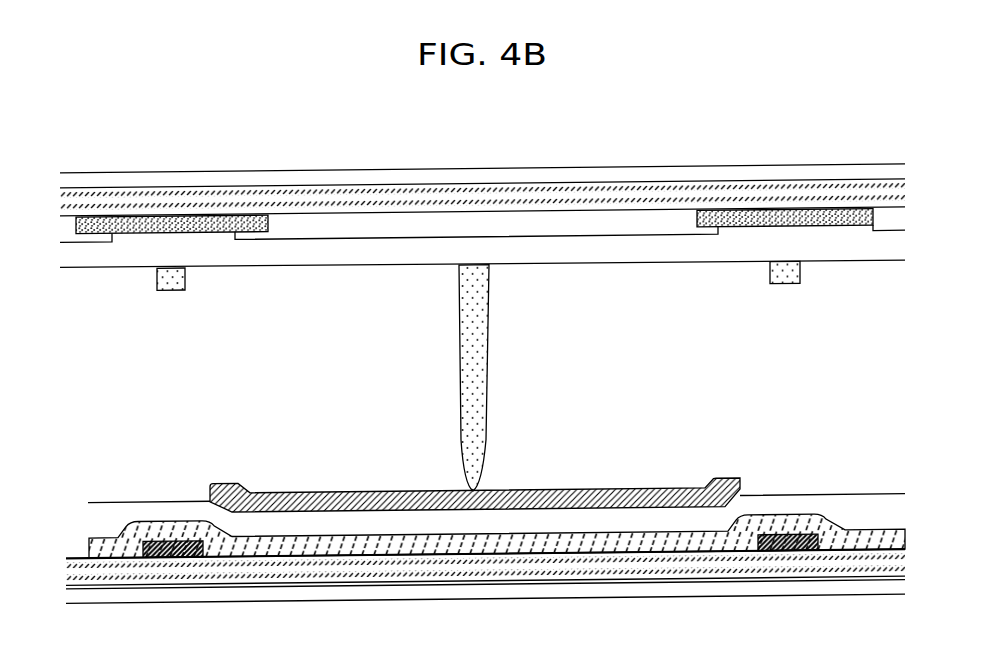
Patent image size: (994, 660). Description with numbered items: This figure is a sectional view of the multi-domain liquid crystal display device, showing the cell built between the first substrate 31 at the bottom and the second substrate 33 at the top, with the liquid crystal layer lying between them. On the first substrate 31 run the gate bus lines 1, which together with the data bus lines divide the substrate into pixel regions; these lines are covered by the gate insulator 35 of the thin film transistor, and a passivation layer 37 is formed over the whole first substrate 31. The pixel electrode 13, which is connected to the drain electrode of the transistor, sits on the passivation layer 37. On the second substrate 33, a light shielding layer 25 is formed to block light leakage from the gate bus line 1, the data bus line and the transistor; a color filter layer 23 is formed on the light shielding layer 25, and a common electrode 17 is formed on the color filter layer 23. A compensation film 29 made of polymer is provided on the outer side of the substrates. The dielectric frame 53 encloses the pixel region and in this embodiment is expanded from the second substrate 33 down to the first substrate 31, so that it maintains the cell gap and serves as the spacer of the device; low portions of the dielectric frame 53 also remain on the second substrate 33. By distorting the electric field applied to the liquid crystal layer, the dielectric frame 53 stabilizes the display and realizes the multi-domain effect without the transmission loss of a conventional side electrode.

The gate bus line 1 is at (163, 555).
The pixel electrode 13 is at (522, 500).
The common electrode 17 is at (278, 259).
The color filter layer 23 is at (502, 240).
The light shielding layer 25 is at (205, 235).
The compensation film 29 is at (533, 181).
The first substrate 31 is at (498, 577).
The second substrate 33 is at (418, 205).
The gate insulator 35 is at (397, 558).
The passivation layer 37 is at (337, 527).
The dielectric frame 53 is at (178, 292).